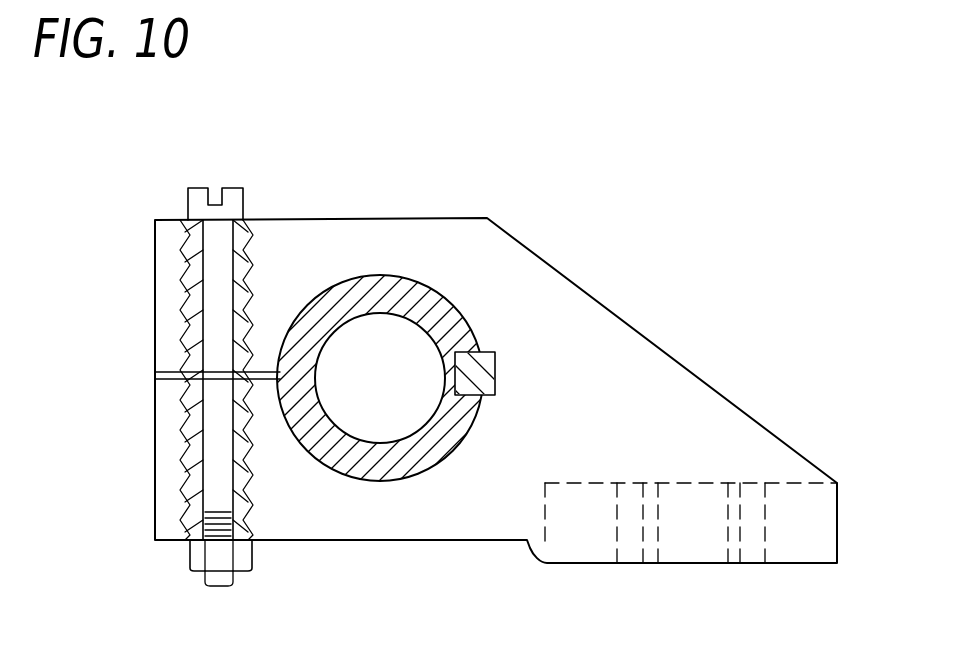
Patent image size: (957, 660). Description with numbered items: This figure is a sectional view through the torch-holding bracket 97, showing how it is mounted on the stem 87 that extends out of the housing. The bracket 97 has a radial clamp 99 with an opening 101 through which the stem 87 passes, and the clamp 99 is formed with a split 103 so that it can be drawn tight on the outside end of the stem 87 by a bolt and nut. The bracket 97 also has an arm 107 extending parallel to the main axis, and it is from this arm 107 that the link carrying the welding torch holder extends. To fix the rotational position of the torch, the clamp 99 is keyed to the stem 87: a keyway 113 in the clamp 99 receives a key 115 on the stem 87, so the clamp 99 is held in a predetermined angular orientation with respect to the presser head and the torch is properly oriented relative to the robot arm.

The stem 87 is at (452, 302).
The bracket 97 is at (655, 320).
The radial clamp 99 is at (155, 220).
The opening 101 is at (370, 272).
The split 103 is at (155, 374).
The arm 107 is at (698, 482).
The keyway 113 is at (497, 396).
The key 115 is at (497, 362).